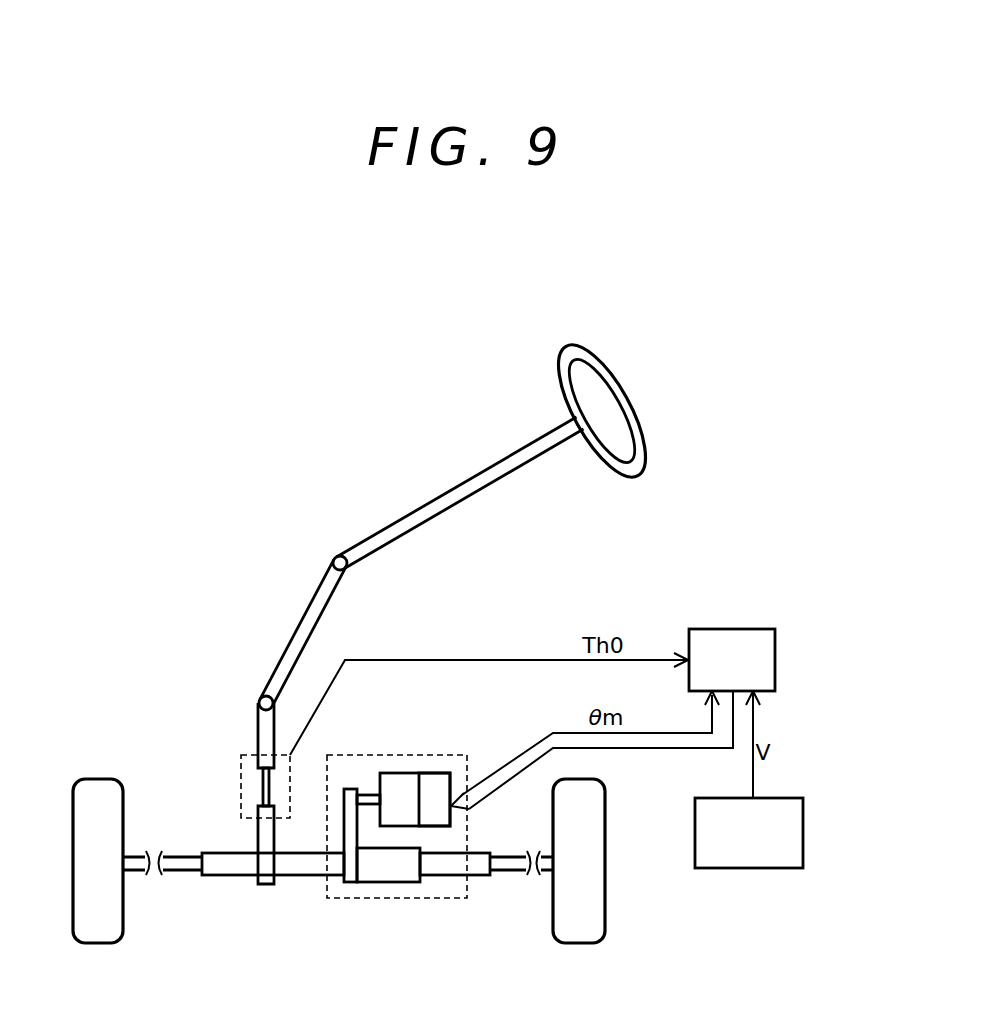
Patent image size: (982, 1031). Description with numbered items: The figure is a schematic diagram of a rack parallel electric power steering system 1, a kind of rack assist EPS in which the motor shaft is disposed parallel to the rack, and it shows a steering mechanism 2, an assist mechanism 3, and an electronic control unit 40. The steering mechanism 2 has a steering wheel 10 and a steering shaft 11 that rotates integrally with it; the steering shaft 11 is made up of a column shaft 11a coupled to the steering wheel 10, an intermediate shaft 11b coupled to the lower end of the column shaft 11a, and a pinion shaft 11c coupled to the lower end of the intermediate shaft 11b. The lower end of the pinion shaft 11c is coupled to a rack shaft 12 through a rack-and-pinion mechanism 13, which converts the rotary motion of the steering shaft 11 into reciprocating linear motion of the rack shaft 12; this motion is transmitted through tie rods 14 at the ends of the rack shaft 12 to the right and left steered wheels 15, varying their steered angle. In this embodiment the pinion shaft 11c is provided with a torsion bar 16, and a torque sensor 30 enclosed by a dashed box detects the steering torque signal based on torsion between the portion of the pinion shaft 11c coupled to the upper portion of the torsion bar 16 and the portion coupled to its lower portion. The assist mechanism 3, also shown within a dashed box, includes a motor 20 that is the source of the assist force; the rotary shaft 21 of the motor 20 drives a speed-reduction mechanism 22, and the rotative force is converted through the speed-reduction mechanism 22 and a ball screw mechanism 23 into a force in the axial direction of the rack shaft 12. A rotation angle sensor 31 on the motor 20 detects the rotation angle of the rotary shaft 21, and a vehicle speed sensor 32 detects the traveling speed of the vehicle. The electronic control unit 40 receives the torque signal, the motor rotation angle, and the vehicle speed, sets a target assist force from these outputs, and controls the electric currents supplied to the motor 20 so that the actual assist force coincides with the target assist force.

The electric power steering system 1 is at (135, 420).
The steering mechanism 2 is at (172, 570).
The assist mechanism 3 is at (368, 900).
The steering wheel 10 is at (630, 408).
The steering shaft 11 is at (249, 539).
The column shaft 11a is at (332, 556).
The intermediate shaft 11b is at (297, 637).
The pinion shaft 11c is at (262, 735).
The rack shaft 12 is at (246, 876).
The rack-and-pinion mechanism 13 is at (250, 848).
The tie rod 14 is at (180, 872).
The steered wheel 15 is at (95, 943).
The torsion bar 16 is at (263, 785).
The motor 20 is at (402, 772).
The rotary shaft 21 is at (368, 793).
The speed-reduction mechanism 22 is at (351, 788).
The ball screw mechanism 23 is at (393, 874).
The torque sensor 30 is at (238, 767).
The rotation angle sensor 31 is at (439, 772).
The vehicle speed sensor 32 is at (804, 822).
The electronic control unit 40 is at (776, 660).